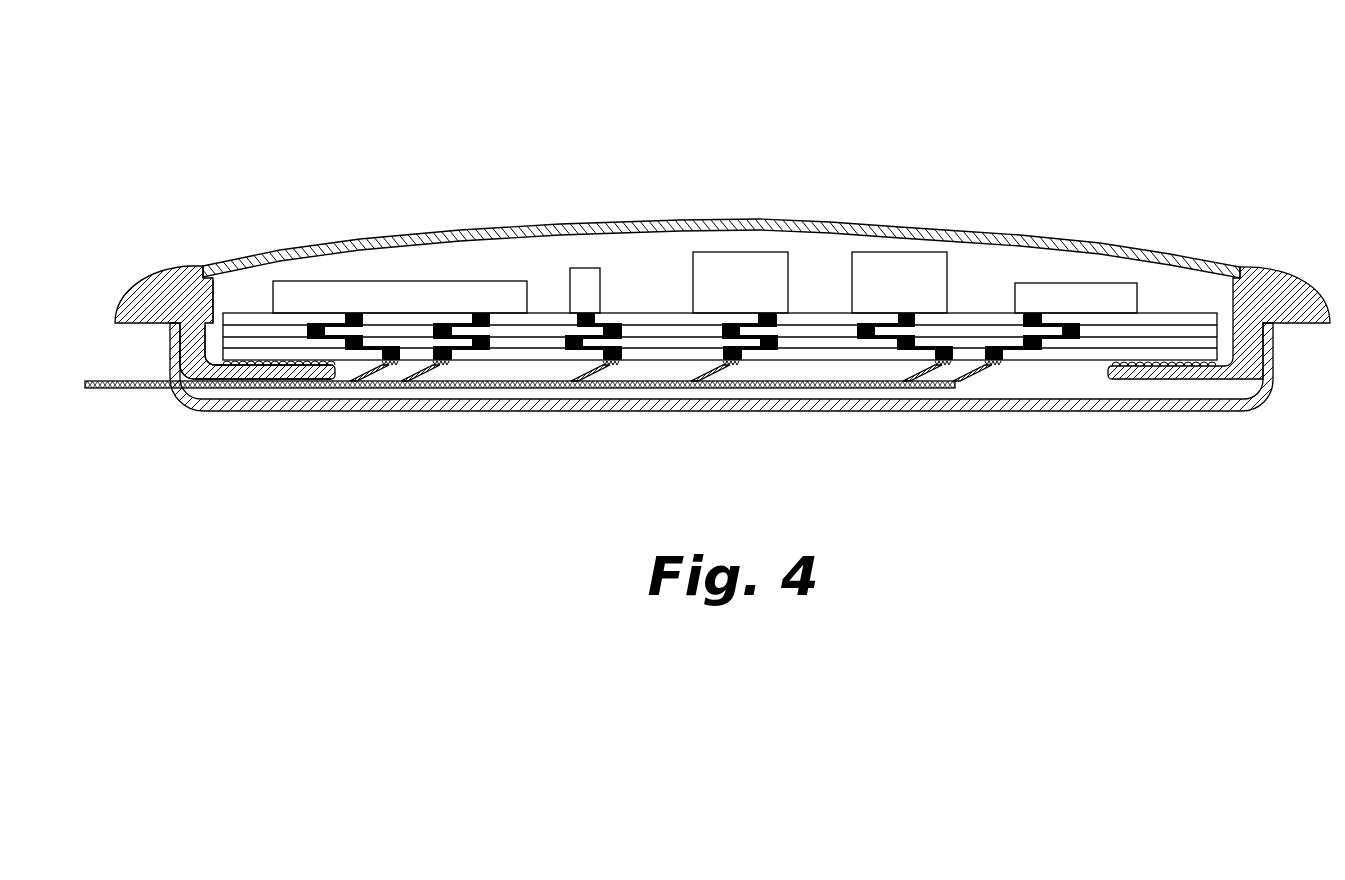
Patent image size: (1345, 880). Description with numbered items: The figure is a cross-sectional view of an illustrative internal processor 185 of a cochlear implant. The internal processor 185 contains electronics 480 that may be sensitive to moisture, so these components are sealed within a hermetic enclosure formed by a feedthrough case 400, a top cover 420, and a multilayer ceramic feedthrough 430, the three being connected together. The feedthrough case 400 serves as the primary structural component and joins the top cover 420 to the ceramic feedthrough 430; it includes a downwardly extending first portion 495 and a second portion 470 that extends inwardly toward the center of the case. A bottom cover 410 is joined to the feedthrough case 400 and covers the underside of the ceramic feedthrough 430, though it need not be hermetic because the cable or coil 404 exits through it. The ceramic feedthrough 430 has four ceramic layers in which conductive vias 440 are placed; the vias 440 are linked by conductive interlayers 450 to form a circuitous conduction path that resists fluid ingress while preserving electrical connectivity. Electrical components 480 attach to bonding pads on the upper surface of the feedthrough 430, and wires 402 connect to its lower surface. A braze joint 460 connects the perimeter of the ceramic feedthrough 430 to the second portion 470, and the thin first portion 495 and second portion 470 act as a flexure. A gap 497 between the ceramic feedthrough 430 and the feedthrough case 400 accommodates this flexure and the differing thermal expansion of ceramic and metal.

The internal processor 185 is at (1015, 118).
The feedthrough case 400 is at (168, 286).
The bottom cover 410 is at (293, 412).
The top cover 420 is at (360, 240).
The multilayer ceramic feedthrough 430 is at (553, 328).
The conductive via 440 is at (772, 348).
The conductive interlayer 450 is at (750, 348).
The braze joint 460 is at (257, 360).
The second portion 470 is at (232, 372).
The electronics 480 is at (720, 277).
The first portion 495 is at (193, 365).
The gap 497 is at (213, 342).
The wires 402 is at (737, 362).
The cable or coil 404 is at (112, 388).